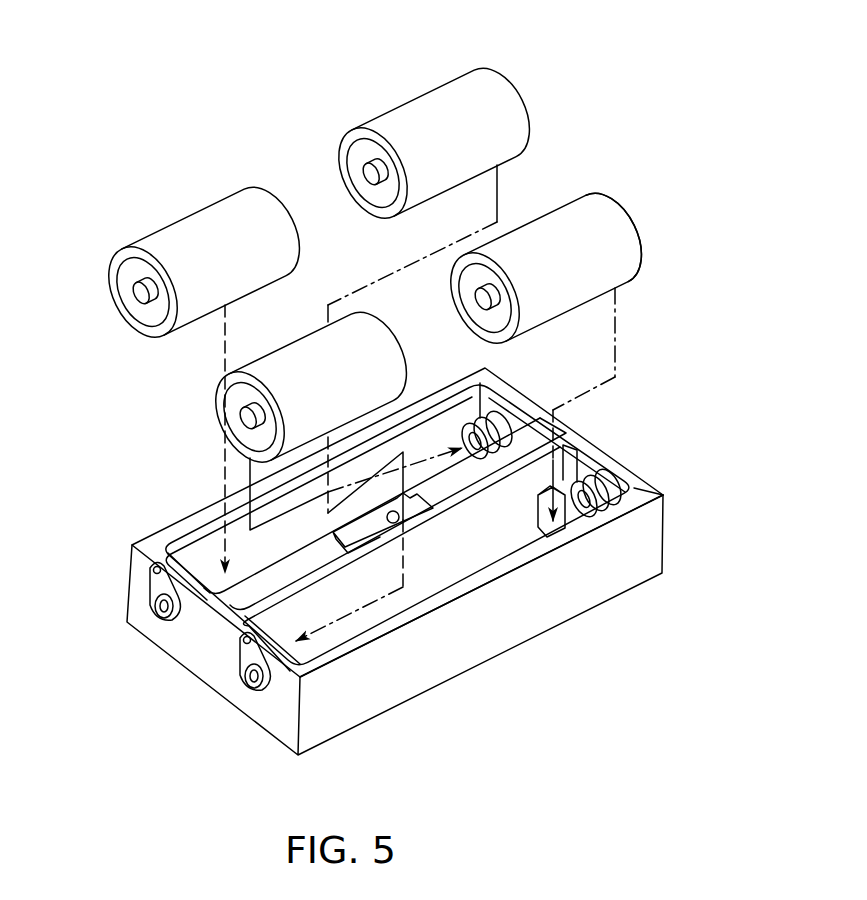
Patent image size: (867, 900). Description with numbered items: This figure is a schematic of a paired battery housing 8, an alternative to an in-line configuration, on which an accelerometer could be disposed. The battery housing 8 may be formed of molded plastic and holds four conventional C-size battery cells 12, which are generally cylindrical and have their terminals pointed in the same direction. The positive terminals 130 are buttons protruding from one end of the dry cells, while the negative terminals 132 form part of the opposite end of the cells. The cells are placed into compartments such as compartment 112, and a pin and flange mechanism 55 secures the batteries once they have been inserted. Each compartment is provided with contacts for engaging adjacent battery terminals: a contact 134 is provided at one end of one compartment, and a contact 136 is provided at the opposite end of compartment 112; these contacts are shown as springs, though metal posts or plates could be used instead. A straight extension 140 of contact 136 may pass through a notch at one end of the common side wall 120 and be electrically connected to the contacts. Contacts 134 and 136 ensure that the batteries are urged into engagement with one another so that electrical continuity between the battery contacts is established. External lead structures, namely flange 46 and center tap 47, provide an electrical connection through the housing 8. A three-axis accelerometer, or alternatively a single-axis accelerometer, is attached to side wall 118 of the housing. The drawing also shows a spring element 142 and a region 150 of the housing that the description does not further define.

The battery housing 8 is at (176, 521).
The battery cells 12 is at (418, 95).
The flange 46 is at (247, 650).
The center tap 47 is at (247, 677).
The pin and flange mechanism 55 is at (391, 511).
The compartment 112 is at (176, 547).
The side wall 118 is at (547, 598).
The common side wall 120 is at (508, 535).
The positive terminals 130 is at (371, 174).
The negative terminals 132 is at (640, 224).
The contact 134 is at (617, 503).
The contact 136 is at (482, 403).
The straight extension 140 is at (527, 410).
The spring contact 142 is at (573, 457).
The battery compartment 150 is at (388, 597).